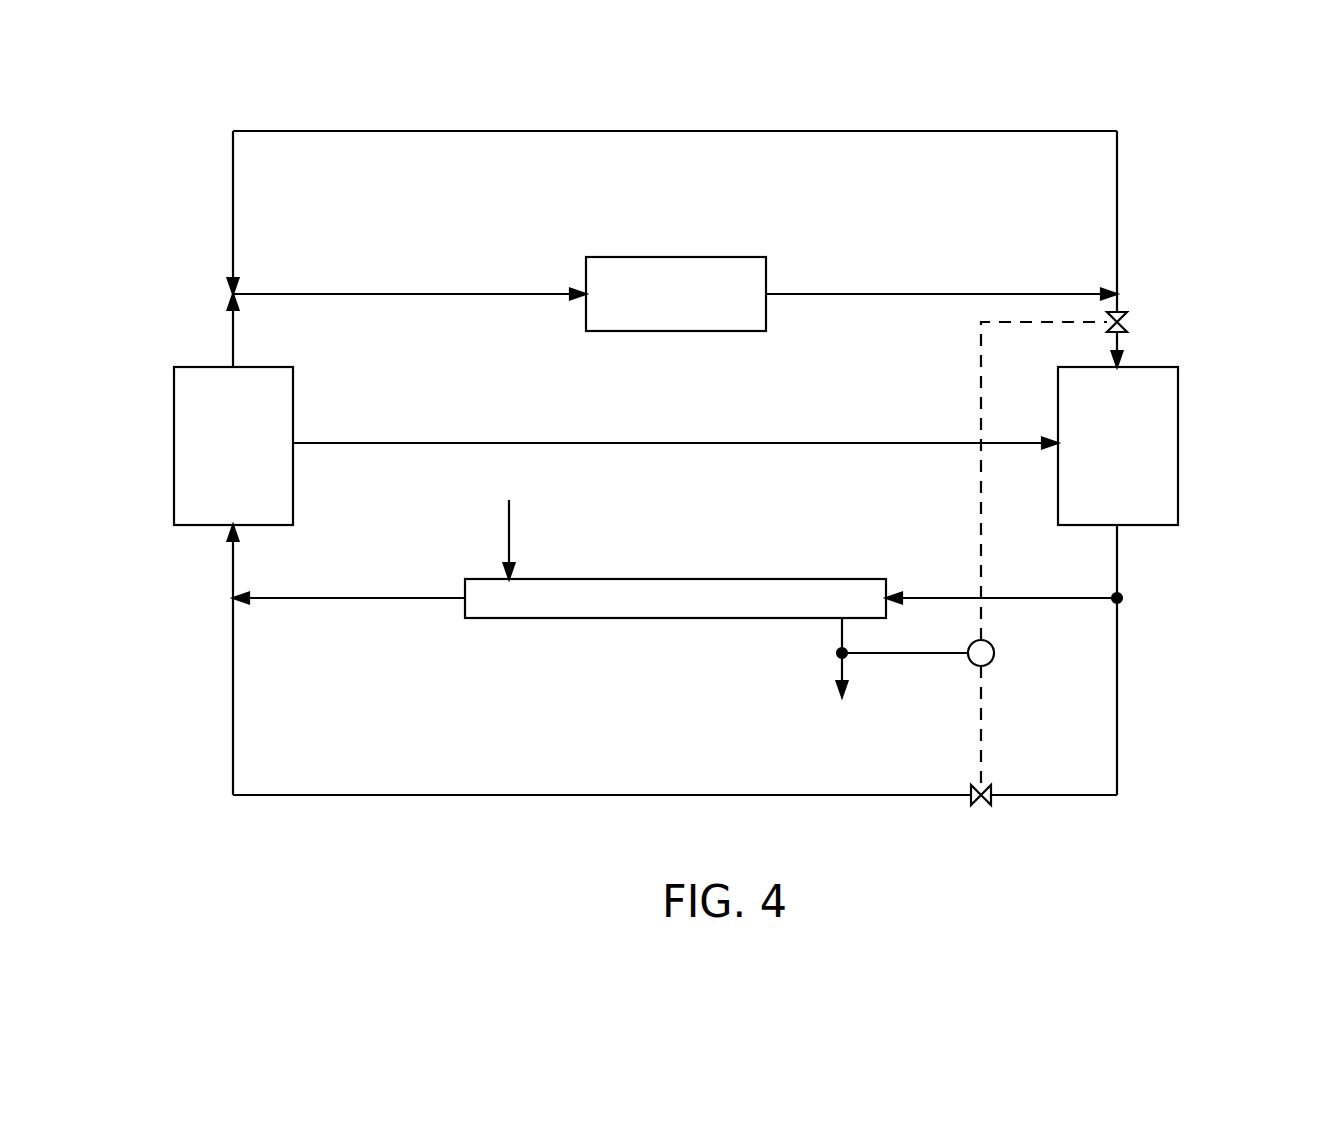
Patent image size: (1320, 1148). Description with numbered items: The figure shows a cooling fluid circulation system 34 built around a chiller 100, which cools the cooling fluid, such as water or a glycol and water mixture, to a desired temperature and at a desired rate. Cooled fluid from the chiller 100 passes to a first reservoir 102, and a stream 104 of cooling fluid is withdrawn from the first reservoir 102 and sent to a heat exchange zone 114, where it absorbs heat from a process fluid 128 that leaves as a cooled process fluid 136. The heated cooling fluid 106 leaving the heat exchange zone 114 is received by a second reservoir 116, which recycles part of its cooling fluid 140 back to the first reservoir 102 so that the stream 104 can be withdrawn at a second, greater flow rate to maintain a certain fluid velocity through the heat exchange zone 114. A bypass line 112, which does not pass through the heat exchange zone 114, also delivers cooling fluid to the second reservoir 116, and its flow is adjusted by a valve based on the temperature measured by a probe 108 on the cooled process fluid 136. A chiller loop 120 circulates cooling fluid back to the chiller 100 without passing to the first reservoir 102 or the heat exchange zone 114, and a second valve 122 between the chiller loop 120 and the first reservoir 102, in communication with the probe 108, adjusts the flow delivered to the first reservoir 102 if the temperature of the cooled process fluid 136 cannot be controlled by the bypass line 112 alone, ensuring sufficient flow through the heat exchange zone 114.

The cooling fluid circulation system 34 is at (1213, 121).
The chiller 100 is at (598, 257).
The first reservoir 102 is at (1168, 367).
The stream of cooling fluid 104 is at (1117, 562).
The heated cooling fluid 106 is at (383, 598).
The probe 108 is at (994, 653).
The bypass line 112 is at (1117, 707).
The heat exchange zone 114 is at (763, 560).
The second reservoir 116 is at (185, 367).
The chiller loop 120 is at (233, 199).
The second valve 122 is at (1122, 314).
The process fluid 128 is at (509, 525).
The cooled process fluid 136 is at (842, 641).
The cooling fluid 140 is at (690, 443).